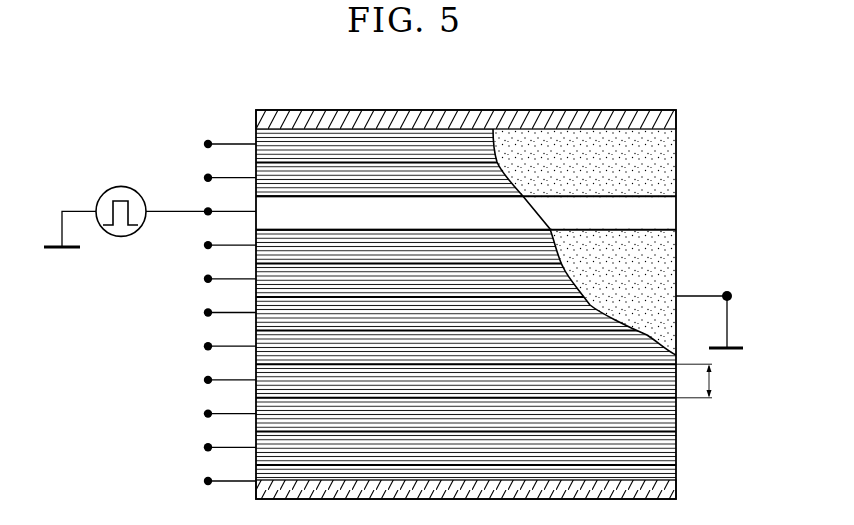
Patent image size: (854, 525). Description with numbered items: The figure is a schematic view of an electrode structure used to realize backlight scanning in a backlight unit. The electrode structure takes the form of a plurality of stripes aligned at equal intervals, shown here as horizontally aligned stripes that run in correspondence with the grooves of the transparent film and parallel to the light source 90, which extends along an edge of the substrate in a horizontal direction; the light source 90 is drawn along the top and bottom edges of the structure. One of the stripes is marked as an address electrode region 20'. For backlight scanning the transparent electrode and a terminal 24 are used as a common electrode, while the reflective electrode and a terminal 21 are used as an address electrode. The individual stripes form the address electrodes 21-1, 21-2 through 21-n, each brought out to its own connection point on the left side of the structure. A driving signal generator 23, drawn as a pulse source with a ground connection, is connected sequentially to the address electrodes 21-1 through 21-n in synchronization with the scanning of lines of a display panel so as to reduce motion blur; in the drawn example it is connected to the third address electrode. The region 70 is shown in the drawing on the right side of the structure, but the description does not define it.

The terminal 21 is at (199, 282).
The address electrode 21-1 is at (199, 141).
The address electrode 21-2 is at (199, 175).
The address electrode 21-n is at (199, 477).
The driving signal generator 23 is at (88, 182).
The terminal 24 is at (731, 294).
The phase-changed region 70 is at (672, 164).
The light source 90 is at (673, 120).
The address electrode region 20' is at (708, 381).